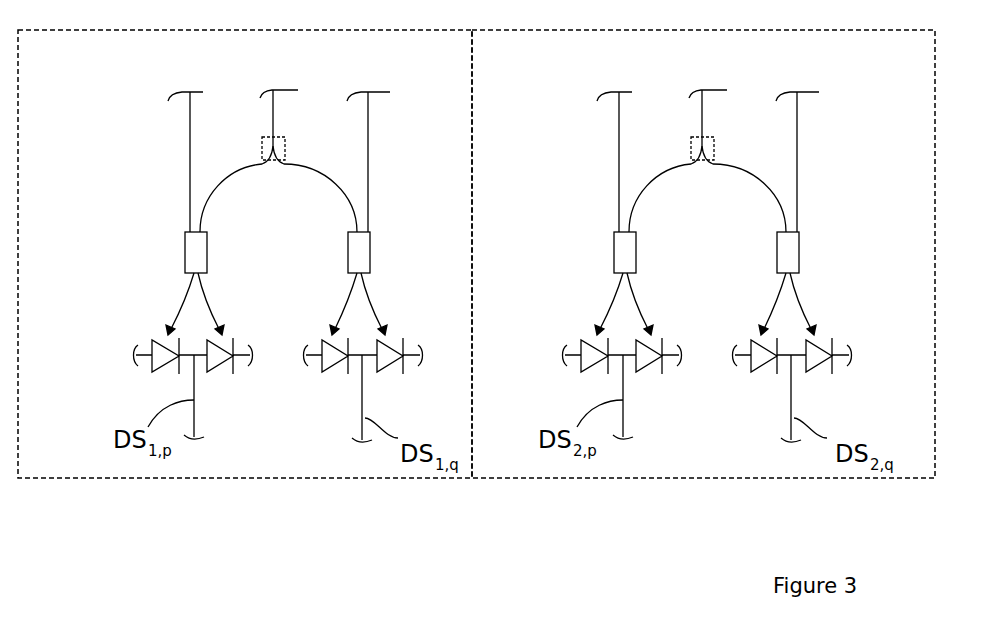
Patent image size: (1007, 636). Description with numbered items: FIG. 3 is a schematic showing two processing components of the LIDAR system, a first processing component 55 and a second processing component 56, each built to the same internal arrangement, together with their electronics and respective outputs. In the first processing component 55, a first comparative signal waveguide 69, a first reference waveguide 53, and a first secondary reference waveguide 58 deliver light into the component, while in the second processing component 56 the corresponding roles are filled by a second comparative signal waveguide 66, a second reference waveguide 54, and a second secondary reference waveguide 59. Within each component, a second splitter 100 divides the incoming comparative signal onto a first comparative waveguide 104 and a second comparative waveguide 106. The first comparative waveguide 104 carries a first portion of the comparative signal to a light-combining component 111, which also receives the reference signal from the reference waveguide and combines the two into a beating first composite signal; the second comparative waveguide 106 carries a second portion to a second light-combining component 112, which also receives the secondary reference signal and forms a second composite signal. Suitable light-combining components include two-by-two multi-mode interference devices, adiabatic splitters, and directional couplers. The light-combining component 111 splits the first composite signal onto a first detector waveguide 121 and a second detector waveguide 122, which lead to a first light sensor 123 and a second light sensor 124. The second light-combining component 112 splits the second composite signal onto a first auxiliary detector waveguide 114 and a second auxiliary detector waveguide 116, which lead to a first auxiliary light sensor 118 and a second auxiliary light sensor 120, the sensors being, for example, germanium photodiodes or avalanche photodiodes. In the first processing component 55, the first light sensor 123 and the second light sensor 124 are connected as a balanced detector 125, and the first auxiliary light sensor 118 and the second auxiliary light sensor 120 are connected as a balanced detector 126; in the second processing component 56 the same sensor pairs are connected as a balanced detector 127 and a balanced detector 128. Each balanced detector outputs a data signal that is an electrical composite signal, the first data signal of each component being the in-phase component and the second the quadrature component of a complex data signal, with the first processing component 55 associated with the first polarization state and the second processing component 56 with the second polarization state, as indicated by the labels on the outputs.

The first reference waveguide 53 is at (190, 177).
The second reference waveguide 54 is at (605, 162).
The first processing component 55 is at (233, 479).
The second processing component 56 is at (582, 479).
The first secondary reference waveguide 58 is at (369, 133).
The second secondary reference waveguide 59 is at (811, 162).
The second comparative signal waveguide 66 is at (670, 103).
The first comparative signal waveguide 69 is at (273, 112).
The second splitter 100 is at (262, 145).
The first comparative waveguide 104 is at (222, 181).
The second comparative waveguide 106 is at (343, 195).
The light-combining component 111 is at (207, 243).
The second light-combining component 112 is at (370, 263).
The first auxiliary detector waveguide 114 is at (340, 310).
The second auxiliary detector waveguide 116 is at (380, 310).
The first auxiliary light sensor 118 is at (323, 371).
The second auxiliary light sensor 120 is at (382, 372).
The first detector waveguide 121 is at (177, 310).
The second detector waveguide 122 is at (210, 298).
The first light sensor 123 is at (160, 352).
The second light sensor 124 is at (212, 371).
The balanced detector 125 is at (173, 390).
The balanced detector 126 is at (350, 390).
The balanced detector 127 is at (575, 397).
The balanced detector 128 is at (763, 409).